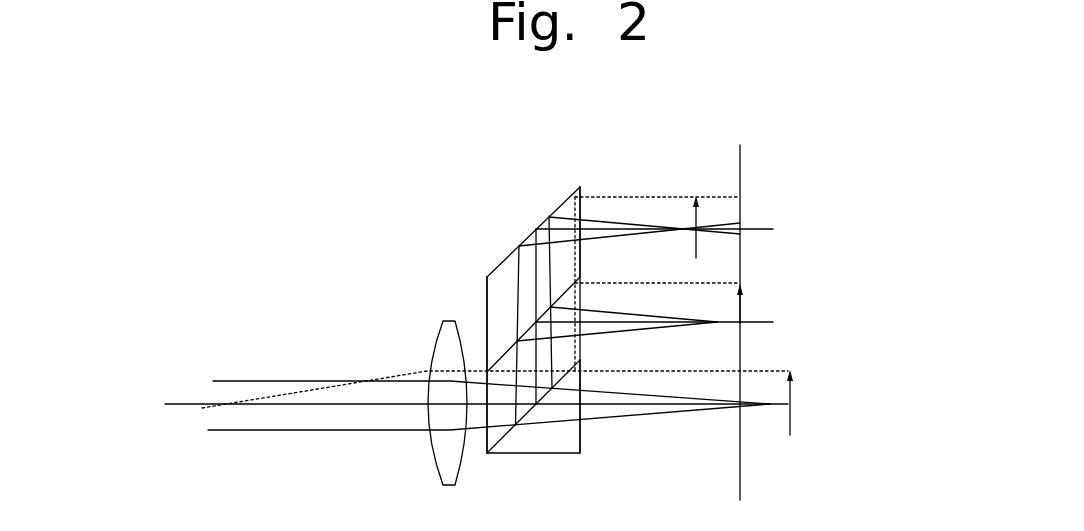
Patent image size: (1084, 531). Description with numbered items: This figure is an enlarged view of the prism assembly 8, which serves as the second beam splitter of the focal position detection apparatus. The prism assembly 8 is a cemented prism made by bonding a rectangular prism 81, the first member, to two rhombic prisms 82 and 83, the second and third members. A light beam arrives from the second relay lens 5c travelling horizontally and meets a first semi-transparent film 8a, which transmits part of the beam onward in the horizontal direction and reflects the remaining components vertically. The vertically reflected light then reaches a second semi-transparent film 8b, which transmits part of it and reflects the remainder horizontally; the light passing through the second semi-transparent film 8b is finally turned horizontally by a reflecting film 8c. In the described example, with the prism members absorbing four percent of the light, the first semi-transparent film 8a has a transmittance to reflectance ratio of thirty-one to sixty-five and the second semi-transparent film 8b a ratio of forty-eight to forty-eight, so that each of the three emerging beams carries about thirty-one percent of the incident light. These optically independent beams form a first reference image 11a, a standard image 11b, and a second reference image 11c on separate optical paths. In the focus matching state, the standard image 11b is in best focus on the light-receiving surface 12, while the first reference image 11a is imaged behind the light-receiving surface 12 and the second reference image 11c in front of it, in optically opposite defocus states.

The second relay lens 5c is at (442, 322).
The prism assembly 8 is at (496, 238).
The rectangular prism 81 is at (572, 432).
The rhombic prism 82 is at (487, 340).
The rhombic prism 83 is at (498, 290).
The first semi-transparent film 8a is at (503, 438).
The second semi-transparent film 8b is at (503, 362).
The reflecting film 8c is at (564, 205).
The first reference image 11a is at (790, 422).
The standard image 11b is at (740, 323).
The second reference image 11c is at (695, 218).
The light-receiving surface 12 is at (742, 177).